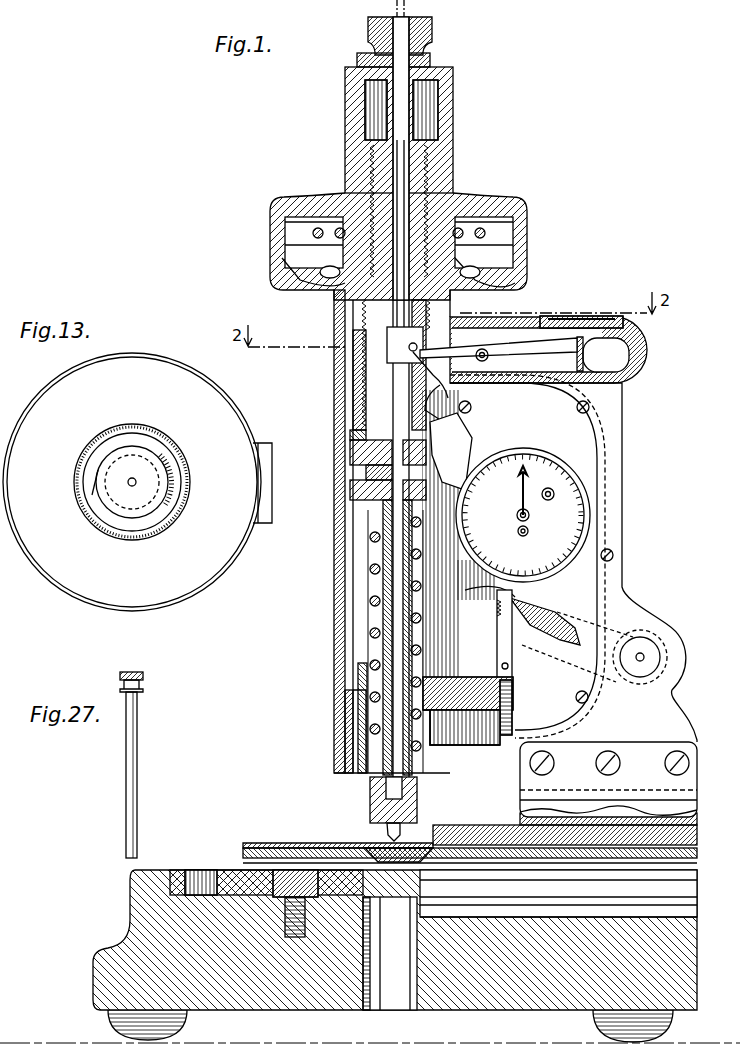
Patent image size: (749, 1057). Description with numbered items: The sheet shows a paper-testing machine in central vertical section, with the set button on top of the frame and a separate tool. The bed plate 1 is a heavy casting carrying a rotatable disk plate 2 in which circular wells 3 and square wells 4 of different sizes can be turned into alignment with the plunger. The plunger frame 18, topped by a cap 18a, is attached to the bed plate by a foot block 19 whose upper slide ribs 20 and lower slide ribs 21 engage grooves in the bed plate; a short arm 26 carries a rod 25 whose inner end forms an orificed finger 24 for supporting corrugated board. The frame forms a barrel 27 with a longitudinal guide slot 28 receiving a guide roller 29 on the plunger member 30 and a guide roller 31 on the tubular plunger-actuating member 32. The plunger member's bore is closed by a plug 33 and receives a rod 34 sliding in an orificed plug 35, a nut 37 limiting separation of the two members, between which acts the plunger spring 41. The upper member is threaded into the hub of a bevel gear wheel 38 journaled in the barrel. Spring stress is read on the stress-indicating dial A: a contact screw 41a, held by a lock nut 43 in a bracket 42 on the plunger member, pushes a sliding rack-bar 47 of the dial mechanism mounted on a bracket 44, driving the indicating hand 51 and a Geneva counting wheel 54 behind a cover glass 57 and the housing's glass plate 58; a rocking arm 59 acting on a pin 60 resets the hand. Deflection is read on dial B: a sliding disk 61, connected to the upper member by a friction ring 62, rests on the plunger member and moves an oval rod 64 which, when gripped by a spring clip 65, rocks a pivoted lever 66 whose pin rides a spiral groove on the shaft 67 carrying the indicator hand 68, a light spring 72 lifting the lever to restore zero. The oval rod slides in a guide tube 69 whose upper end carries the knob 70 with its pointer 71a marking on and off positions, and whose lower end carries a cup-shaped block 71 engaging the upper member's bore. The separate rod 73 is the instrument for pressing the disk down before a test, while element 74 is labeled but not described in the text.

In FIG. 1, the bed plate 1 is at (130, 906).
In FIG. 1, the disk plate 2 is at (228, 870).
In FIG. 1, the circular wells 3 is at (410, 925).
In FIG. 1, the square wells 4 is at (197, 870).
In FIG. 1, the plunger frame 18 is at (623, 410).
In FIG. 13, the plunger frame 18 is at (262, 448).
In FIG. 1, the cap 18a is at (348, 178).
In FIG. 13, the cap 18a is at (200, 389).
In FIG. 1, the foot block 19 is at (520, 796).
In FIG. 1, the upper slide ribs 20 is at (626, 808).
In FIG. 1, the lower slide ribs 21 is at (571, 810).
In FIG. 1, the orificed finger 24 is at (420, 845).
In FIG. 1, the rod 25 is at (458, 838).
In FIG. 1, the short arm 26 is at (522, 818).
In FIG. 1, the barrel 27 is at (352, 650).
In FIG. 1, the longitudinal guide slot 28 is at (345, 599).
In FIG. 1, the guide roller 29 is at (342, 700).
In FIG. 1, the plunger member 30 is at (356, 746).
In FIG. 1, the guide roller 31 is at (375, 458).
In FIG. 1, the plunger-actuating member 32 is at (366, 405).
In FIG. 1, the plug 33 is at (372, 796).
In FIG. 1, the rod 34 is at (362, 760).
In FIG. 1, the orificed plug 35 is at (370, 498).
In FIG. 1, the nut 37 is at (380, 470).
In FIG. 1, the bevel gear wheel 38 is at (322, 278).
In FIG. 1, the plunger spring 41 is at (371, 569).
In FIG. 1, the contact screw 41a is at (514, 695).
In FIG. 1, the bracket 42 is at (514, 712).
In FIG. 1, the lock nut 43 is at (500, 722).
In FIG. 1, the bracket 44 is at (463, 462).
In FIG. 1, the rack-bar 47 is at (497, 638).
In FIG. 1, the indicating hand 51 is at (517, 502).
In FIG. 1, the Geneva lock counting wheel 54 is at (555, 494).
In FIG. 1, the cover glass 57 is at (575, 510).
In FIG. 1, the glass plate 58 is at (583, 455).
In FIG. 1, the rocking arm 59 is at (576, 618).
In FIG. 1, the pin 60 is at (508, 666).
In FIG. 1, the sliding disk 61 is at (352, 436).
In FIG. 1, the friction ring 62 is at (445, 416).
In FIG. 1, the oval rod 64 is at (403, 185).
In FIG. 1, the spring clip 65 is at (390, 358).
In FIG. 1, the pivoted lever 66 is at (508, 350).
In FIG. 1, the shaft 67 is at (615, 345).
In FIG. 1, the indicator hand 68 is at (560, 322).
In FIG. 1, the guide tube 69 is at (388, 115).
In FIG. 1, the knob 70 is at (432, 35).
In FIG. 13, the knob 70 is at (145, 490).
In FIG. 1, the cup-shaped block 71 is at (495, 266).
In FIG. 1, the pointer 71a is at (372, 56).
In FIG. 13, the pointer 71a is at (98, 500).
In FIG. 1, the light spring 72 is at (458, 390).
In FIG. 1, the rod 73 is at (395, 9).
In FIG. 27, the rod 73 is at (127, 775).
In FIG. 1, the tip 74 is at (387, 836).
In FIG. 1, the stress-indicating dial A is at (590, 523).
In FIG. 1, the deflection-indicating dial B is at (596, 318).